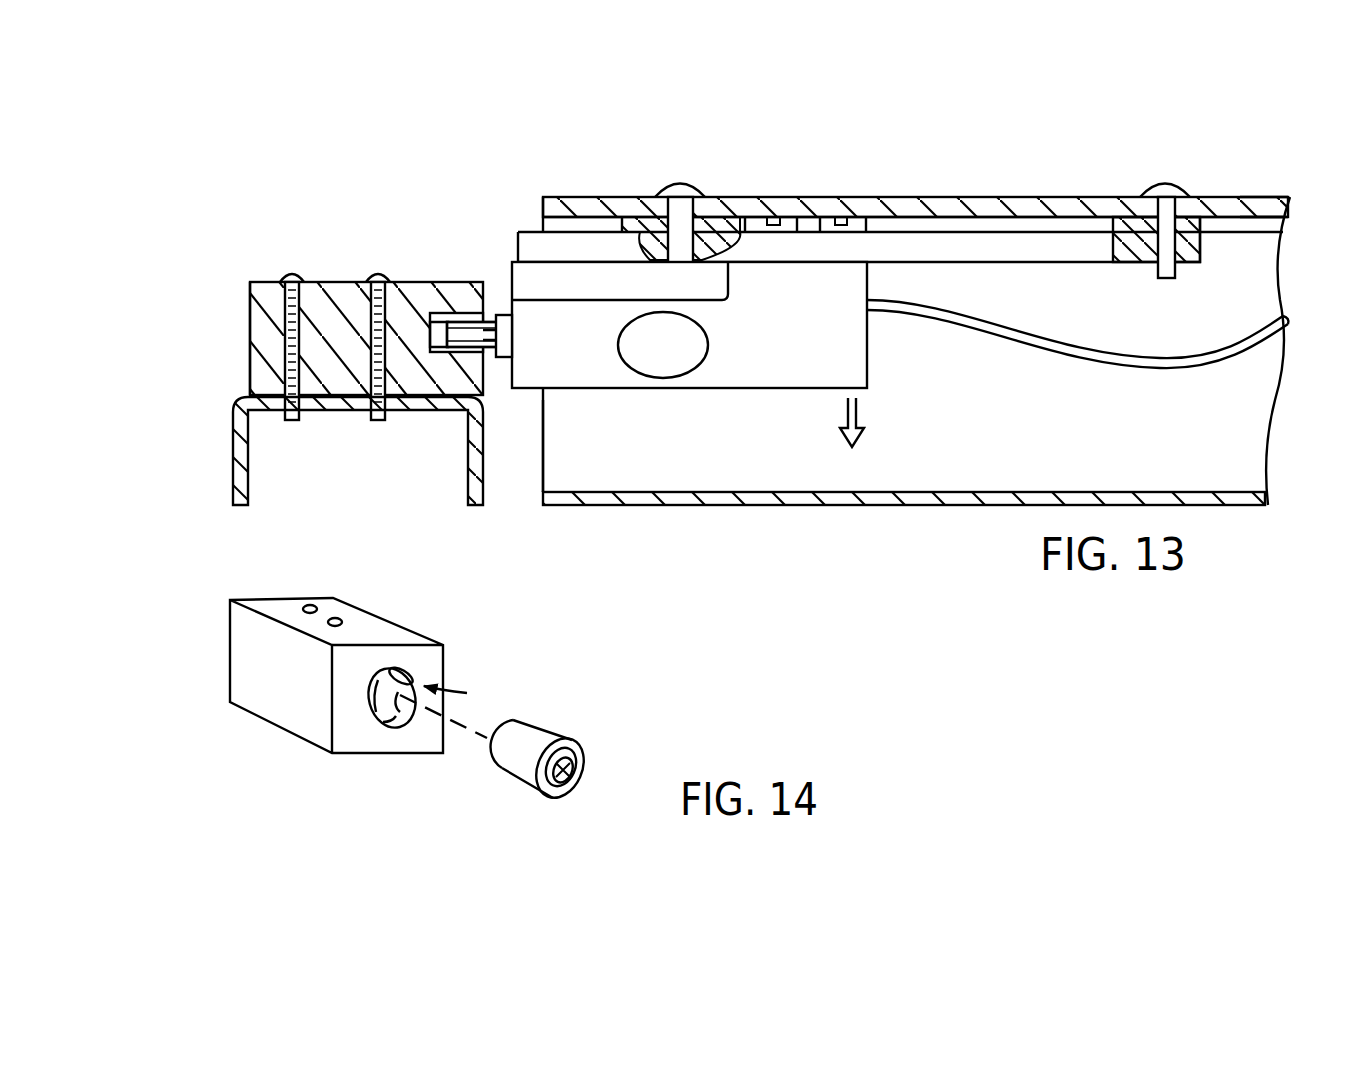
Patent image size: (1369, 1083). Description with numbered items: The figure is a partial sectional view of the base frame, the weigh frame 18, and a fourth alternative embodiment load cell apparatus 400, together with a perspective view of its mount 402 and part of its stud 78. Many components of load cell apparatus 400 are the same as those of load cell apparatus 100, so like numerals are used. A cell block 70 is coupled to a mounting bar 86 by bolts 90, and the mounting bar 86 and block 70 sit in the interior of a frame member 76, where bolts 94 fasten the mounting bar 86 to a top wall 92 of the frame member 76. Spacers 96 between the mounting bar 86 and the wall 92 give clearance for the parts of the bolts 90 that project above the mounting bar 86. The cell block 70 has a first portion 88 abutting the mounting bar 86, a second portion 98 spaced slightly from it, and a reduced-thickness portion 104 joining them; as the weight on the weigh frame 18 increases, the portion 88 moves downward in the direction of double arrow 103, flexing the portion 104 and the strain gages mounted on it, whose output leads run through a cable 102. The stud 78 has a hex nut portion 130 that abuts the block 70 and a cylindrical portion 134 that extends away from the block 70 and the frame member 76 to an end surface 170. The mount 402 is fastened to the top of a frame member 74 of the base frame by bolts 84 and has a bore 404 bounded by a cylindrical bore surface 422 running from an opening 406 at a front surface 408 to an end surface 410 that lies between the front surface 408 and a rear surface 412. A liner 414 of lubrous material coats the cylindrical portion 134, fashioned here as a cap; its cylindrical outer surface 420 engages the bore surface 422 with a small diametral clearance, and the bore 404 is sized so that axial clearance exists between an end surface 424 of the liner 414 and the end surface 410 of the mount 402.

In FIG. 13, the weigh frame 18 is at (1245, 124).
In FIG. 13, the cell block 70 is at (700, 400).
In FIG. 13, the frame member 74 is at (236, 454).
In FIG. 13, the frame member 76 is at (1232, 446).
In FIG. 13, the stud 78 is at (496, 366).
In FIG. 13, the bolts 84 is at (285, 313).
In FIG. 13, the mounting bar 86 is at (970, 250).
In FIG. 13, the first portion 88 is at (870, 273).
In FIG. 13, the bolts 90 is at (840, 220).
In FIG. 13, the top wall 92 is at (1243, 206).
In FIG. 13, the bolts 94 is at (684, 188).
In FIG. 13, the spacers 96 is at (650, 240).
In FIG. 13, the second portion 98 is at (580, 270).
In FIG. 13, the load cell apparatus 100 is at (982, 394).
In FIG. 13, the cable 102 is at (1128, 360).
In FIG. 13, the double arrow 103 is at (866, 410).
In FIG. 13, the reduced-thickness portion 104 is at (718, 345).
In FIG. 13, the hex nut portion 130 is at (497, 312).
In FIG. 13, the cylindrical portion 134 is at (466, 330).
In FIG. 14, the cylindrical portion 134 is at (564, 792).
In FIG. 13, the end surface 170 is at (434, 320).
In FIG. 13, the load cell apparatus 400 is at (345, 209).
In FIG. 13, the mount 402 is at (326, 271).
In FIG. 14, the mount 402 is at (262, 688).
In FIG. 14, the bore 404 is at (464, 707).
In FIG. 14, the opening 406 is at (410, 672).
In FIG. 14, the front surface 408 is at (430, 668).
In FIG. 14, the end surface 410 is at (390, 668).
In FIG. 13, the rear surface 412 is at (250, 302).
In FIG. 13, the liner 414 is at (462, 356).
In FIG. 14, the liner 414 is at (582, 771).
In FIG. 14, the cylindrical outer surface 420 is at (526, 738).
In FIG. 14, the cylindrical bore surface 422 is at (400, 716).
In FIG. 13, the end surface 424 is at (432, 348).